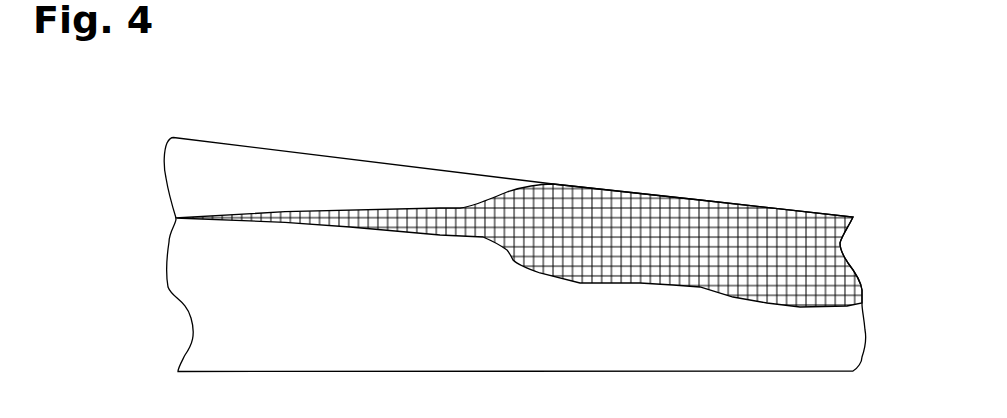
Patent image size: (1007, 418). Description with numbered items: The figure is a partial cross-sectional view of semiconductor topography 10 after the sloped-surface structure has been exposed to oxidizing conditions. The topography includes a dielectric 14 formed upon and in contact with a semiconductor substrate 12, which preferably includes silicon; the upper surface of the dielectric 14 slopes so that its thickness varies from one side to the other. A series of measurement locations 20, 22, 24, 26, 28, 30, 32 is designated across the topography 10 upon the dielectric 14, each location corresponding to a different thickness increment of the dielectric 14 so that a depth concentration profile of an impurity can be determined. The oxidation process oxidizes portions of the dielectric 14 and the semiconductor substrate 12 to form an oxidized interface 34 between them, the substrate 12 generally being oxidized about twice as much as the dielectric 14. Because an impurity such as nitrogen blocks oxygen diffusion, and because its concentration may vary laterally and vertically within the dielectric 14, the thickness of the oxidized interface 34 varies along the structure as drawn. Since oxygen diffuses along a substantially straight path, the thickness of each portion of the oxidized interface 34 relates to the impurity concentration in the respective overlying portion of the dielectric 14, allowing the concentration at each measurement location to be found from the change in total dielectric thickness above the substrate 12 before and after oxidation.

The semiconductor topography 10 is at (742, 73).
The semiconductor substrate 12 is at (326, 326).
The dielectric 14 is at (167, 183).
The measurement location 20 is at (175, 108).
The measurement location 22 is at (275, 124).
The measurement location 24 is at (383, 144).
The measurement location 26 is at (493, 161).
The measurement location 28 is at (602, 174).
The measurement location 30 is at (712, 189).
The measurement location 32 is at (820, 206).
The oxidized interface 34 is at (810, 275).